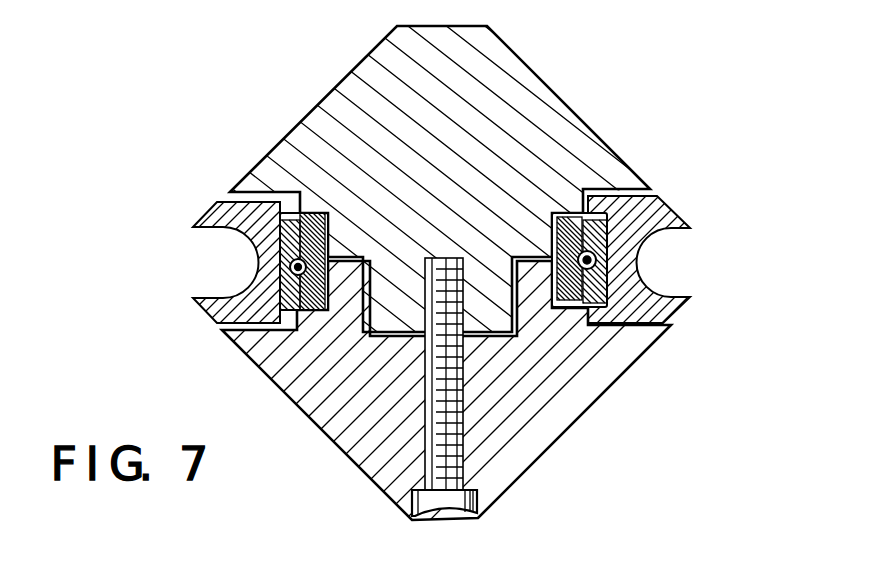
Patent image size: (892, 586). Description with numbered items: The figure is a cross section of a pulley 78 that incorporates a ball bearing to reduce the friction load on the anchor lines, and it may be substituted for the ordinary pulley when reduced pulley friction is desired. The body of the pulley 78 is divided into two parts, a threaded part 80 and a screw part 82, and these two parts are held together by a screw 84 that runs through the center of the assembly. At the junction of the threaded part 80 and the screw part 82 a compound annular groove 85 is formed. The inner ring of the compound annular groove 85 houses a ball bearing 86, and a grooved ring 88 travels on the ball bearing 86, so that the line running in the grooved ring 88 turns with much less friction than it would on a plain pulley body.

The pulley 78 is at (624, 135).
The threaded part 80 is at (555, 90).
The screw part 82 is at (592, 403).
The screw 84 is at (412, 517).
The compound annular groove 85 is at (602, 232).
The ball bearing 86 is at (648, 219).
The grooved ring 88 is at (691, 302).